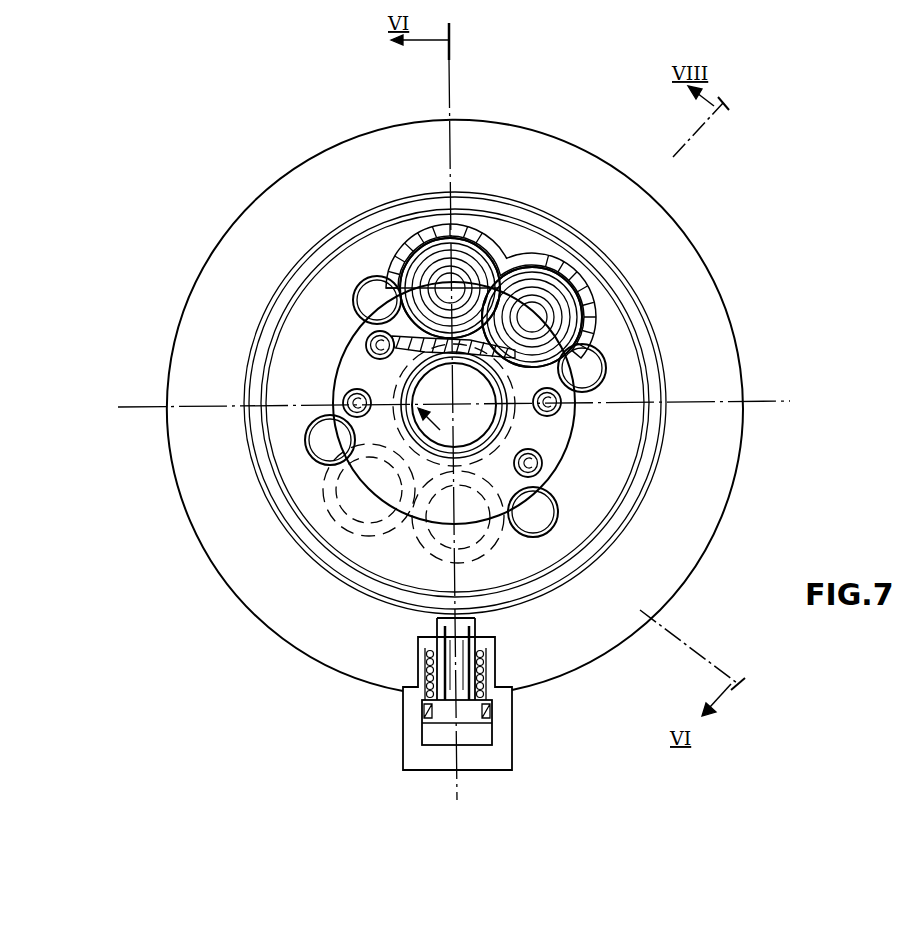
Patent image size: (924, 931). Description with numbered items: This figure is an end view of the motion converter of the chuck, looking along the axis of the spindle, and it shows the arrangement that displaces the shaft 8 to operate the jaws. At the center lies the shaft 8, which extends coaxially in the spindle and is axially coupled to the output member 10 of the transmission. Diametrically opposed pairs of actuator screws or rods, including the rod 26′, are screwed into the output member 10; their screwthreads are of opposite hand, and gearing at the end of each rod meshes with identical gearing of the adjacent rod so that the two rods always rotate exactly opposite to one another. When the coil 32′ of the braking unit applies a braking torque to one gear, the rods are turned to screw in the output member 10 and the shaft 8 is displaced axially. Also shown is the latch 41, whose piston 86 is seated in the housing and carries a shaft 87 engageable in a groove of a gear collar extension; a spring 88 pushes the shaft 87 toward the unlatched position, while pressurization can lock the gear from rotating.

The actuator screw or rod 26′ is at (451, 286).
The coil 32′ is at (713, 350).
The output member 10 is at (553, 447).
The shaft 8 is at (453, 401).
The latch 41 is at (440, 641).
The piston 86 is at (447, 722).
The shaft 87 is at (430, 703).
The spring 88 is at (490, 694).